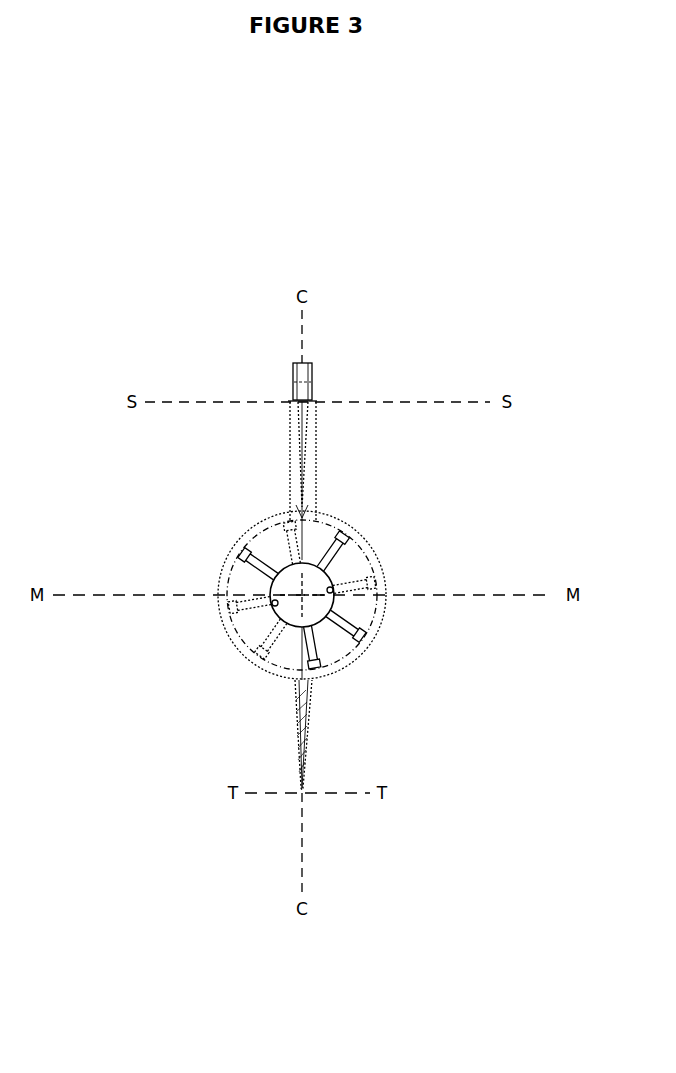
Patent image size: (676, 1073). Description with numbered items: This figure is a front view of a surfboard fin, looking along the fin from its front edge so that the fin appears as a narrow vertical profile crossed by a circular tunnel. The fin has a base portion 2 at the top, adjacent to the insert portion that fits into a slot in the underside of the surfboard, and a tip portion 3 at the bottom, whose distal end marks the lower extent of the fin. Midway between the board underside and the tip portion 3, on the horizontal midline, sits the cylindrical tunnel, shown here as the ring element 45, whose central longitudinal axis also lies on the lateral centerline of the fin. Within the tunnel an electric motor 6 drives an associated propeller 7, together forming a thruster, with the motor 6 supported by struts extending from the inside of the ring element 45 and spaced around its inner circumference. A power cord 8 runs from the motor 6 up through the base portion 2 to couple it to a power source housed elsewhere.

The base portion 2 is at (312, 457).
The power cord 8 is at (313, 515).
The outer ring 45 is at (363, 549).
The electric motor 6 is at (318, 605).
The propeller 7 is at (248, 625).
The tip portion 3 is at (310, 743).